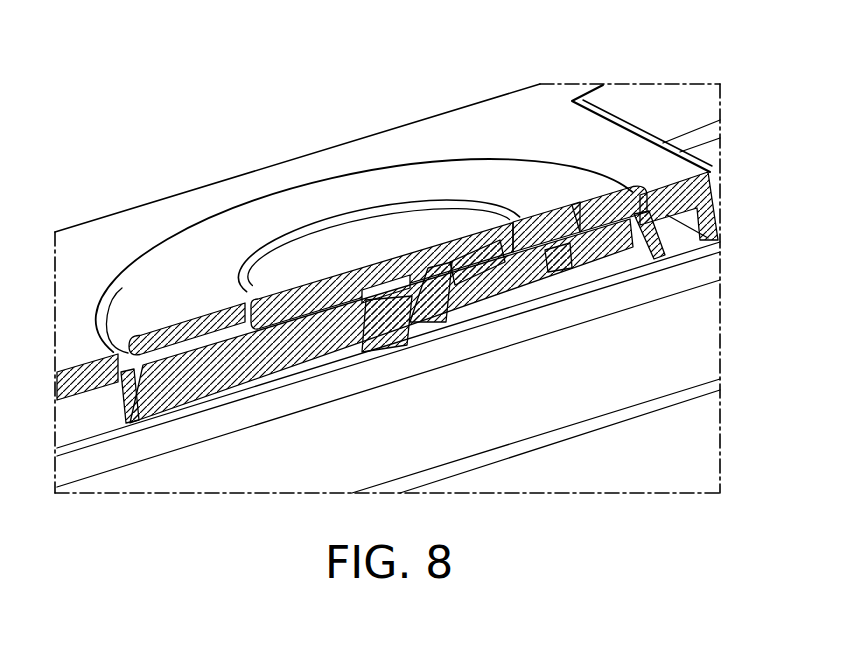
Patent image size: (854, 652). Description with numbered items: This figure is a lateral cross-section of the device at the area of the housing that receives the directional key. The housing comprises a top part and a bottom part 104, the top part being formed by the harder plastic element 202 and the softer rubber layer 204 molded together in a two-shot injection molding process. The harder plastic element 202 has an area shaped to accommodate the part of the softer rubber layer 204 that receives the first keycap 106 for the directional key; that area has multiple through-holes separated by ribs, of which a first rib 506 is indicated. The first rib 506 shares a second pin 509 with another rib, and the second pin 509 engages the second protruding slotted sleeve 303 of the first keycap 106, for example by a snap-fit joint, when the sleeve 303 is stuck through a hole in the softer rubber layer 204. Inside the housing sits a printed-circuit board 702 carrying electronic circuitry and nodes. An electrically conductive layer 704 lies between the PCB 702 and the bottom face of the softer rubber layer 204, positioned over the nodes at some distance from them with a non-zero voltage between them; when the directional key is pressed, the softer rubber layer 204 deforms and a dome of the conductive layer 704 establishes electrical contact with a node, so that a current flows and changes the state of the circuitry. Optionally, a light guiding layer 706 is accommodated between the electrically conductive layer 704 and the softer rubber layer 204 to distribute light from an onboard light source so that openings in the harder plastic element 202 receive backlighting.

The bottom part 104 is at (593, 402).
The first keycap 106 is at (343, 243).
The harder plastic element 202 is at (187, 210).
The softer rubber layer 204 is at (553, 268).
The second protruding slotted sleeve 303 is at (450, 275).
The first rib 506 is at (375, 348).
The second pin 509 is at (422, 318).
The printed-circuit board 702 is at (305, 393).
The electrically conductive layer 704 is at (213, 405).
The light guiding layer 706 is at (677, 247).